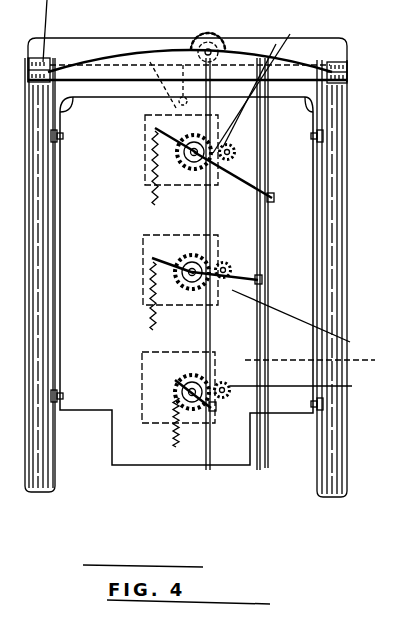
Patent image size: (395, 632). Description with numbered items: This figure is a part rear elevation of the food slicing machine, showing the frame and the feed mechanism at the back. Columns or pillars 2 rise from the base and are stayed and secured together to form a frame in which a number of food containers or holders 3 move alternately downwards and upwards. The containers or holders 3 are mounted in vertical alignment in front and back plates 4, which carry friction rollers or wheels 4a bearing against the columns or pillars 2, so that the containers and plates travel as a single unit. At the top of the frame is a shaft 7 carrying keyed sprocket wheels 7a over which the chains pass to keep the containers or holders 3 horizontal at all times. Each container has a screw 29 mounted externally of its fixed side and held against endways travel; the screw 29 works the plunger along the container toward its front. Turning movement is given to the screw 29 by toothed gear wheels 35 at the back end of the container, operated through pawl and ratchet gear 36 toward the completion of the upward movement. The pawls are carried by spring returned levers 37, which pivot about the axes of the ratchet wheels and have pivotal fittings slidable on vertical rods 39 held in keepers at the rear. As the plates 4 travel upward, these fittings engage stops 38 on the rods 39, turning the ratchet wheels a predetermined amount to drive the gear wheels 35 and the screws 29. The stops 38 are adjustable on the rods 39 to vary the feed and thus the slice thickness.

The columns or pillars 2 is at (338, 229).
The food containers or holders 3 is at (138, 47).
The front and back plates 4 is at (132, 142).
The friction rollers or wheels 4a is at (53, 130).
The shaft 7 is at (210, 49).
The sprocket wheels 7a is at (193, 33).
The screw 29 is at (232, 158).
The toothed gear wheels 35 is at (293, 207).
The pawl and ratchet gear 36 is at (238, 152).
The spring returned levers 37 is at (272, 200).
The stops 38 is at (274, 197).
The vertical rods 39 is at (207, 470).